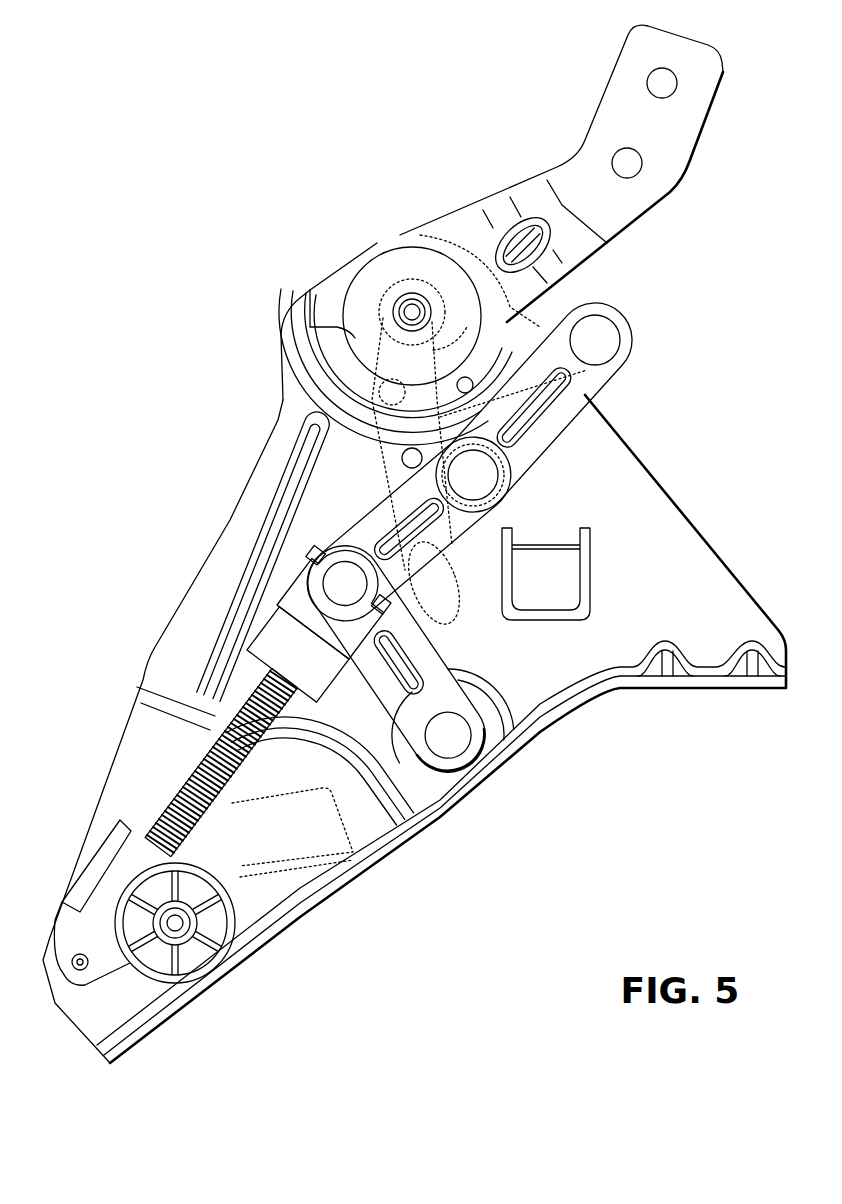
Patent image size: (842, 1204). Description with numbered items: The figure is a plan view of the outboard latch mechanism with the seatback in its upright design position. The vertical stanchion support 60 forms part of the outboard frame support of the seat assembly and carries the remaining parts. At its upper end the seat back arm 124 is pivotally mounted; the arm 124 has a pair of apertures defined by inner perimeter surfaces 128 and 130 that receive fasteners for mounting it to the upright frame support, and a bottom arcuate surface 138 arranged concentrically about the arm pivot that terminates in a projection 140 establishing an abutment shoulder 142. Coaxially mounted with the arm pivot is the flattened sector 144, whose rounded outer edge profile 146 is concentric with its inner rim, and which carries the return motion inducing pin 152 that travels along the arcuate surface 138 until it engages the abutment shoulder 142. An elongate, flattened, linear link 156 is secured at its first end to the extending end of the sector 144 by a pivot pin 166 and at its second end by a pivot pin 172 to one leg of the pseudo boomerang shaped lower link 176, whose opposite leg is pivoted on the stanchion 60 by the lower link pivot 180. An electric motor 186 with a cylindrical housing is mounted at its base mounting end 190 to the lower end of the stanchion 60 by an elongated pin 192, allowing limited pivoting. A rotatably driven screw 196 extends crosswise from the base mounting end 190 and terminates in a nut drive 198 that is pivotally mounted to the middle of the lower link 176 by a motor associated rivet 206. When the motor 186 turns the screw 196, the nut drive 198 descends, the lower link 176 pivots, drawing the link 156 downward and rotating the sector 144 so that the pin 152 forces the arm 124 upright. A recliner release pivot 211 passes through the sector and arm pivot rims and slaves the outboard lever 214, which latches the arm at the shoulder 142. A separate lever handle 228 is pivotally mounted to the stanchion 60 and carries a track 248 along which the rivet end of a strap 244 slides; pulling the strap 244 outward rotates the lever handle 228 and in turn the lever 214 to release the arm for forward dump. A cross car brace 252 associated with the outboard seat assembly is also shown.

The vertical stanchion support 60 is at (240, 523).
The arm 124 is at (463, 242).
The inner perimeter surface 128 is at (610, 163).
The inner perimeter surface 130 is at (647, 80).
The bottom arcuate surface 138 is at (325, 362).
The projection 140 is at (307, 297).
The abutment shoulder 142 is at (297, 345).
The sector 144 is at (417, 268).
The outer edge profile 146 is at (337, 290).
The return motion inducing pin 152 is at (568, 393).
The link 156 is at (573, 422).
The pivot pin 166 is at (598, 340).
The pivot pin 172 is at (470, 478).
The lower link 176 is at (380, 523).
The lower link pivot 180 is at (457, 743).
The electric motor 186 is at (200, 960).
The base mounting end 190 is at (93, 910).
The elongated pin 192 is at (78, 968).
The rotatably driven screw 196 is at (190, 782).
The nut drive 198 is at (287, 647).
The motor associated rivet 206 is at (333, 572).
The recliner release pivot 211 is at (405, 305).
The lever 214 is at (460, 327).
The lever handle 228 is at (380, 467).
The strap 244 is at (282, 398).
The track 248 is at (430, 583).
The cross car brace 252 is at (590, 565).